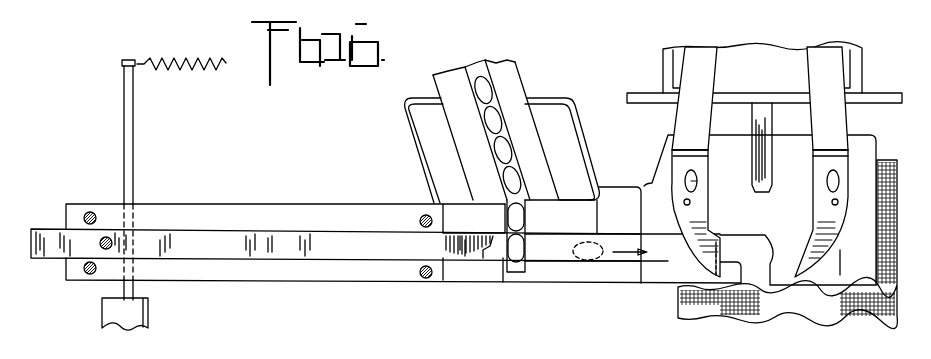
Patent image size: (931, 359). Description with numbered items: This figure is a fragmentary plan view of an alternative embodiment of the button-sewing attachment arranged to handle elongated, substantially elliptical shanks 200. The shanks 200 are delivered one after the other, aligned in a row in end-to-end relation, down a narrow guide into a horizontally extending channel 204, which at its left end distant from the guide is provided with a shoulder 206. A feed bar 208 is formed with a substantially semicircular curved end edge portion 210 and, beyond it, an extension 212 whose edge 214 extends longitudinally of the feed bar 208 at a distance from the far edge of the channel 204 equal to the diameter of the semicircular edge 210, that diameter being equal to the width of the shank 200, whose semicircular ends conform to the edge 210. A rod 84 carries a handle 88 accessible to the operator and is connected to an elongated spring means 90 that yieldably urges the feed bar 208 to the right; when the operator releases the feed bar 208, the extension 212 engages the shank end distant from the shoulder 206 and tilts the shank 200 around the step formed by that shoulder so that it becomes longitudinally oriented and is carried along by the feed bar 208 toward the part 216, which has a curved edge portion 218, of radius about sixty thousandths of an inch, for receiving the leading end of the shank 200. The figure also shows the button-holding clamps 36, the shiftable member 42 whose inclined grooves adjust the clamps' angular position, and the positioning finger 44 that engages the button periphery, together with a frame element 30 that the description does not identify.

The frame body 30 is at (792, 308).
The button-holding clamps 36 is at (690, 220).
The shiftable member 42 is at (858, 70).
The positioning finger 44 is at (750, 188).
The rod 84 is at (133, 172).
The handle 88 is at (140, 311).
The spring means 90 is at (190, 68).
The shank 200 is at (503, 150).
The channel 204 is at (555, 253).
The shoulder 206 is at (517, 268).
The feed bar 208 is at (268, 240).
The semicircular curved end edge portion 210 is at (480, 256).
The extension 212 is at (476, 228).
The edge 214 is at (492, 262).
The part 216 is at (840, 272).
The curved edge portion 218 is at (760, 257).